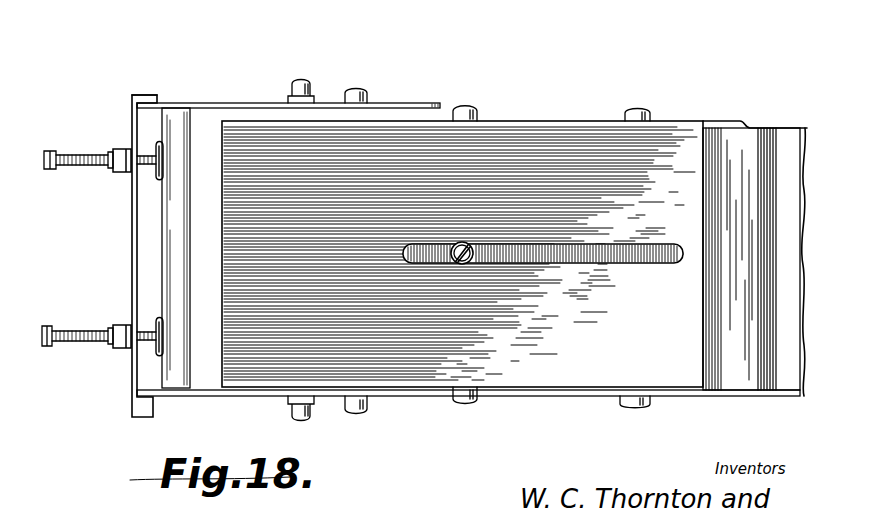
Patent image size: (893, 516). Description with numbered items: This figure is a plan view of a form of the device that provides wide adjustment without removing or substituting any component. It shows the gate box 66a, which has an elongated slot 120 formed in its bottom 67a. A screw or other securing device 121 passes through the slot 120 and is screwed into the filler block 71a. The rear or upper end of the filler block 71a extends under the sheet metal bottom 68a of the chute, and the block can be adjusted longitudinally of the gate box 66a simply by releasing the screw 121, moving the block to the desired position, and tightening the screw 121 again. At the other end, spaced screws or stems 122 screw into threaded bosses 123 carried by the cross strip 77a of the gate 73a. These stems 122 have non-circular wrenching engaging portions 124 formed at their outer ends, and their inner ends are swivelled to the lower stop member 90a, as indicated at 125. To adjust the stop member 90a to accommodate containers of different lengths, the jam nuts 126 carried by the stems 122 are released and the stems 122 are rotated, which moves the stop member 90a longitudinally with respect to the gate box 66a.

The gate box 66a is at (578, 121).
The bottom 67a is at (580, 384).
The sheet metal bottom 68a is at (792, 127).
The filler block 71a is at (748, 374).
The gate 73a is at (133, 97).
The cross strip 77a is at (133, 262).
The lower stop member 90a is at (178, 382).
The elongated slot 120 is at (652, 265).
The screw 121 is at (466, 264).
The stems 122 is at (87, 170).
The threaded bosses 123 is at (117, 148).
The wrenching engaging portions 124 is at (52, 150).
The swivel connection 125 is at (167, 147).
The jam nuts 126 is at (110, 170).